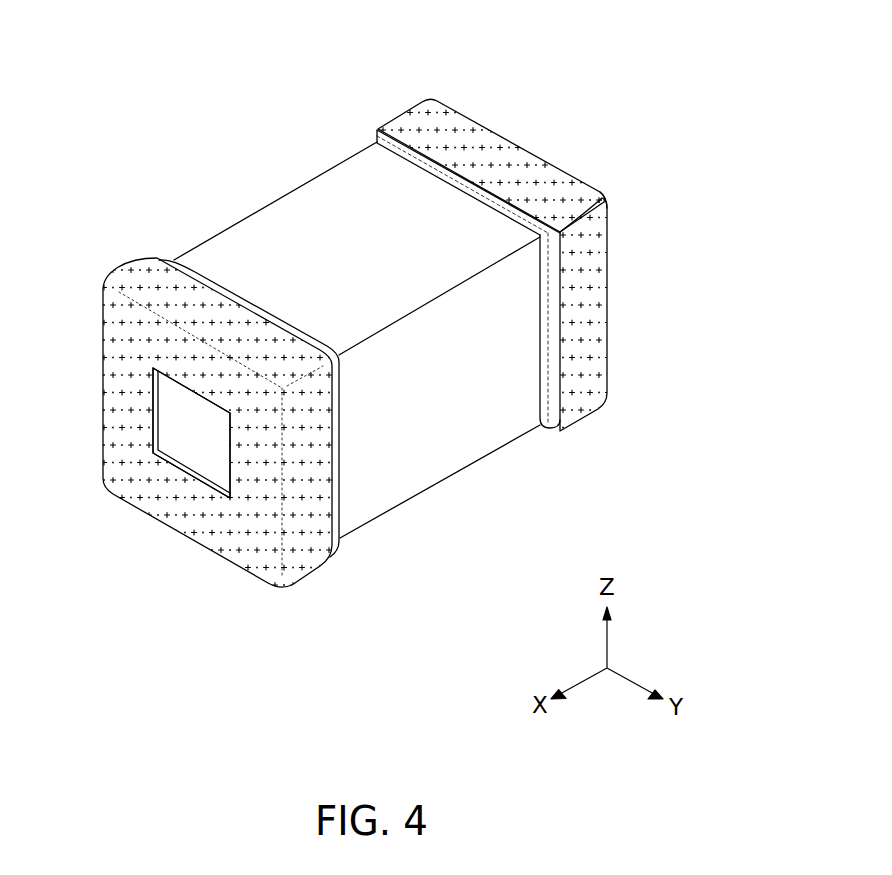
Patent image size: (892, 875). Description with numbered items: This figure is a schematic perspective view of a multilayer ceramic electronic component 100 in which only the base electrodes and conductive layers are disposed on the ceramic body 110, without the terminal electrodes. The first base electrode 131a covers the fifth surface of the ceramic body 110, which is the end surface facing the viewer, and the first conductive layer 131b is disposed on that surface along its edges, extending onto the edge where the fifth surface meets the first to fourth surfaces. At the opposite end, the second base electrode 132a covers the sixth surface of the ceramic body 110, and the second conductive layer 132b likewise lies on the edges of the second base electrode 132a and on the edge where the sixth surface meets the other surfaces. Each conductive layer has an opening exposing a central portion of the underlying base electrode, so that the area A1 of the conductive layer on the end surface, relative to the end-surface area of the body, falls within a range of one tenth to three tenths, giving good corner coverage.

The multilayer ceramic electronic component 100 is at (115, 30).
The ceramic body 110 is at (310, 198).
The first base electrode 131a is at (220, 260).
The first conductive layer 131b is at (125, 258).
The second base electrode 132a is at (425, 140).
The second conductive layer 132b is at (522, 162).
The area of the conductive layer A1 is at (148, 483).